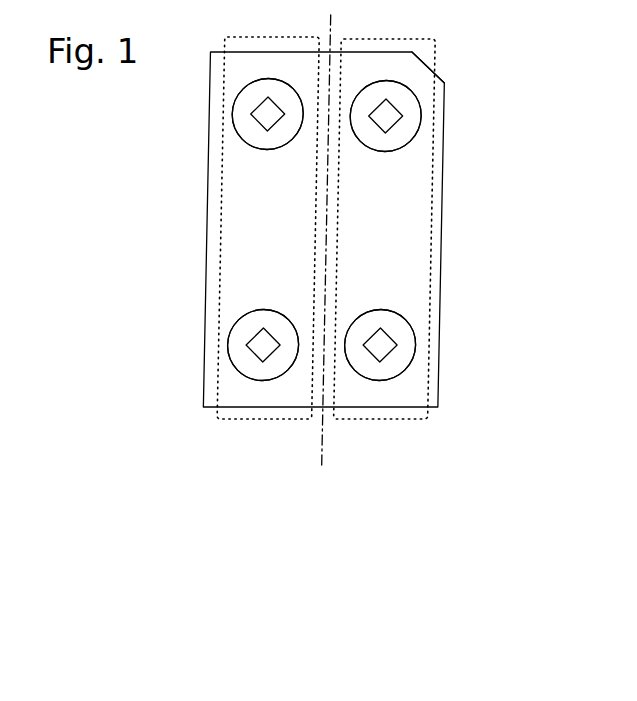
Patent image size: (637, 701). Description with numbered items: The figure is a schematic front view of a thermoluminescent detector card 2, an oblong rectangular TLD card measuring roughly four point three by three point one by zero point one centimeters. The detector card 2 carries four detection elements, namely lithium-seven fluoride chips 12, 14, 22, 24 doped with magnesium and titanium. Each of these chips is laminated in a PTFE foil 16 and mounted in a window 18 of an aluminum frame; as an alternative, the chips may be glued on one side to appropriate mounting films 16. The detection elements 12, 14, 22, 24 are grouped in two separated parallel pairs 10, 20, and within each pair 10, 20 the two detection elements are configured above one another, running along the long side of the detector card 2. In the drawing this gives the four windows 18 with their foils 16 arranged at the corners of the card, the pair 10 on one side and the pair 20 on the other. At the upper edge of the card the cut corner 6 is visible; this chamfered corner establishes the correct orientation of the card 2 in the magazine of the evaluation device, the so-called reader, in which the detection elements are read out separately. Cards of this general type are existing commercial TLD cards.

The thermoluminescent detector card 2 is at (443, 228).
The cut corner 6 is at (438, 78).
The first pair of detection elements 10 is at (235, 420).
The second pair of detection elements 20 is at (397, 422).
The lithium-7 fluoride chip 12 is at (252, 134).
The lithium-7 fluoride chip 14 is at (253, 359).
The lithium-7 fluoride chip 22 is at (400, 118).
The lithium-7 fluoride chip 24 is at (397, 357).
The PTFE foil 16 is at (252, 142).
The window 18 is at (240, 93).